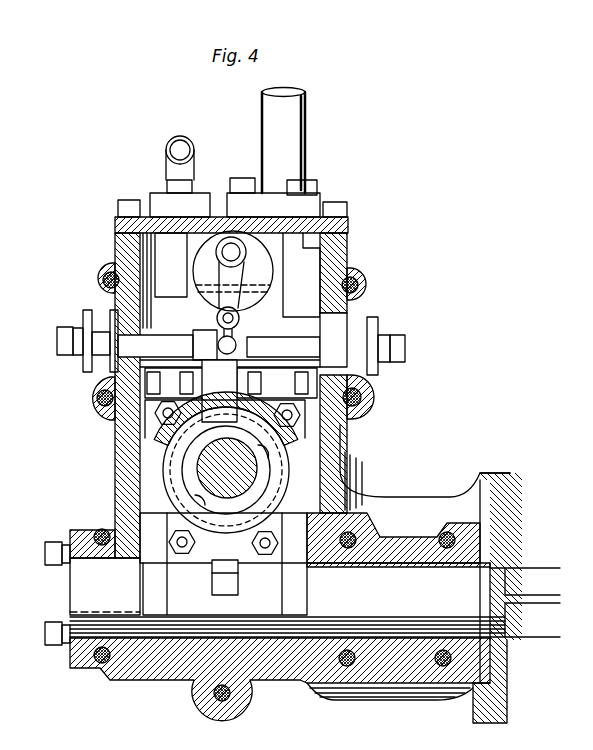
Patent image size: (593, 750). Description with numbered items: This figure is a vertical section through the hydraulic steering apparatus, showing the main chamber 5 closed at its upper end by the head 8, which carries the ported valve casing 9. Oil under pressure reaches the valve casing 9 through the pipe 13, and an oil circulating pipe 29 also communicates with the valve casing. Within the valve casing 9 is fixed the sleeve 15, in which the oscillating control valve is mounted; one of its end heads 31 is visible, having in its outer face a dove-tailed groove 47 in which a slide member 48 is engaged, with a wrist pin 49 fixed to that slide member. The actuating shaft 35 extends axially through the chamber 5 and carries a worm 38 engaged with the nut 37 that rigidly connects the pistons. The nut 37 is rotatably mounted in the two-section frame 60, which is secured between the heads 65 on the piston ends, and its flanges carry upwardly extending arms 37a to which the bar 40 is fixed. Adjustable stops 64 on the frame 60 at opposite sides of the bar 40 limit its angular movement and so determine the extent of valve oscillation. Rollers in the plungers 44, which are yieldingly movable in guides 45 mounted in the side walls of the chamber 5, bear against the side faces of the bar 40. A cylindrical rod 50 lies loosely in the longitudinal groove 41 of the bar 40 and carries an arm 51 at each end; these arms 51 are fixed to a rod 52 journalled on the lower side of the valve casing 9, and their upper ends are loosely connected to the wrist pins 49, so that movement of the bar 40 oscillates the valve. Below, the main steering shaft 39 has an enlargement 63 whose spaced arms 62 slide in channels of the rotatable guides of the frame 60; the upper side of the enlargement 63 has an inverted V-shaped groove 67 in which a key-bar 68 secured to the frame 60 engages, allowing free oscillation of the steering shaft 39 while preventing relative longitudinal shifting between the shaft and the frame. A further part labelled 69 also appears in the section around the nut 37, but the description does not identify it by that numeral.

The main chamber 5 is at (140, 491).
The head 8 is at (340, 228).
The valve casing 9 is at (183, 280).
The pipe 13 is at (288, 158).
The sleeve 15 is at (346, 256).
The oil circulating pipe 29 is at (191, 170).
The end head 31 is at (318, 250).
The shaft 35 is at (197, 470).
The nut 37 is at (330, 432).
The arm 37a is at (153, 433).
The worm 38 is at (270, 478).
The main steering shaft 39 is at (520, 573).
The bar 40 is at (140, 414).
The groove 41 is at (322, 322).
The plunger 44 is at (88, 362).
The guide 45 is at (140, 327).
The groove 47 is at (235, 230).
The slide member 48 is at (228, 237).
The wrist pin 49 is at (262, 258).
The cylindrical rod 50 is at (290, 334).
The arm 51 is at (225, 274).
The rod 52 is at (224, 317).
The frame 60 is at (367, 405).
The arm 62 is at (140, 505).
The enlargement 63 is at (223, 564).
The adjustable stop 64 is at (97, 381).
The head 65 is at (330, 427).
The groove 67 is at (227, 595).
The key-bar 68 is at (222, 570).
The bearing ring 69 is at (300, 456).